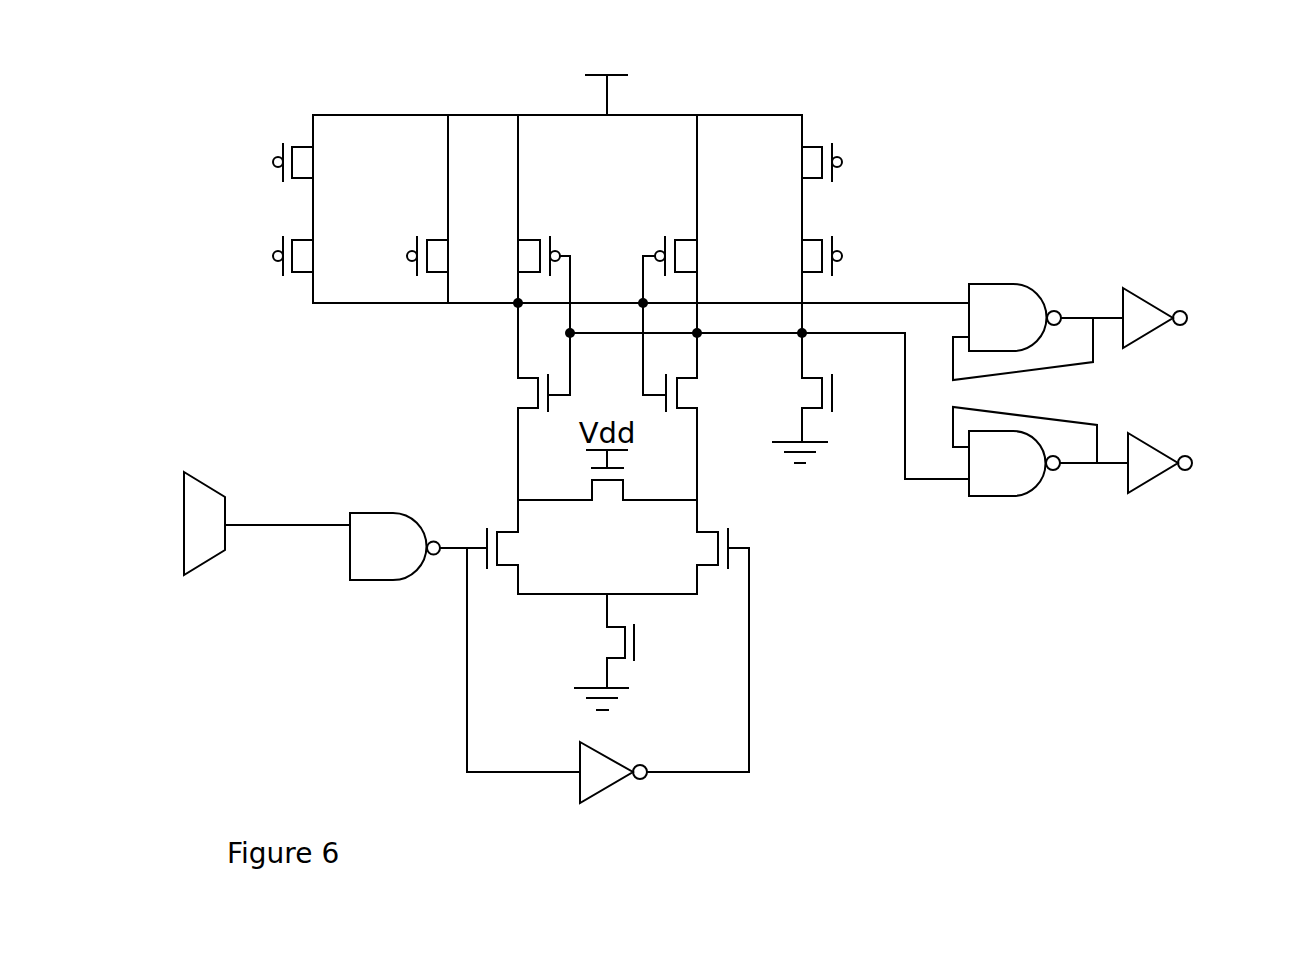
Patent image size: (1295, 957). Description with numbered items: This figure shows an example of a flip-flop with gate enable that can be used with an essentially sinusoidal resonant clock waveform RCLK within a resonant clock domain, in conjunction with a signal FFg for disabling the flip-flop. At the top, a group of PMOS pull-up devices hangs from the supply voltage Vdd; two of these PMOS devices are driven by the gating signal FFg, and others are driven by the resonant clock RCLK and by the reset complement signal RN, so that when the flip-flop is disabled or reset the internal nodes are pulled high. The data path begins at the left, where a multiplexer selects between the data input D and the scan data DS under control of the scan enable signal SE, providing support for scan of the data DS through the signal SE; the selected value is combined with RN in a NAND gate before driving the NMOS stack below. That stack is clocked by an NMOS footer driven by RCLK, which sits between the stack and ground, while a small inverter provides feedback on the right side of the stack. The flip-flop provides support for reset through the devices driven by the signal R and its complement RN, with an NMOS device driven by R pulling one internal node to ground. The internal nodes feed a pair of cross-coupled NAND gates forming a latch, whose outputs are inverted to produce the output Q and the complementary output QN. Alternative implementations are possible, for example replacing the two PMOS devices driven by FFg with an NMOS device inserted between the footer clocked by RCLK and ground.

The supply voltage Vdd is at (557, 79).
The flip-flop gating signal FFg is at (273, 162).
The resonant clock waveform RCLK is at (273, 256).
The reset complement signal RN is at (407, 256).
The reset signal R is at (832, 393).
The data input D is at (174, 489).
The scan data DS is at (174, 554).
The scan enable signal SE is at (205, 565).
The complementary output QN is at (1187, 318).
The output Q is at (1192, 463).